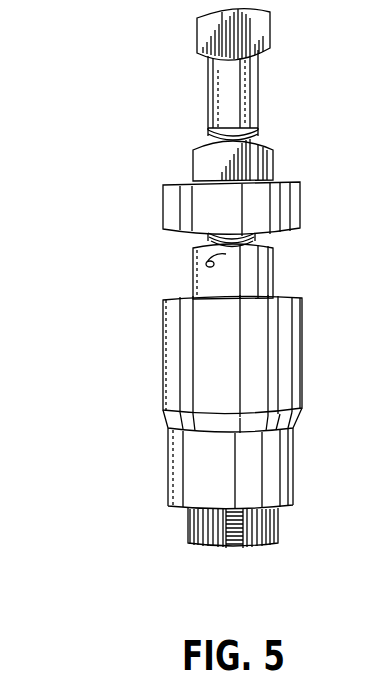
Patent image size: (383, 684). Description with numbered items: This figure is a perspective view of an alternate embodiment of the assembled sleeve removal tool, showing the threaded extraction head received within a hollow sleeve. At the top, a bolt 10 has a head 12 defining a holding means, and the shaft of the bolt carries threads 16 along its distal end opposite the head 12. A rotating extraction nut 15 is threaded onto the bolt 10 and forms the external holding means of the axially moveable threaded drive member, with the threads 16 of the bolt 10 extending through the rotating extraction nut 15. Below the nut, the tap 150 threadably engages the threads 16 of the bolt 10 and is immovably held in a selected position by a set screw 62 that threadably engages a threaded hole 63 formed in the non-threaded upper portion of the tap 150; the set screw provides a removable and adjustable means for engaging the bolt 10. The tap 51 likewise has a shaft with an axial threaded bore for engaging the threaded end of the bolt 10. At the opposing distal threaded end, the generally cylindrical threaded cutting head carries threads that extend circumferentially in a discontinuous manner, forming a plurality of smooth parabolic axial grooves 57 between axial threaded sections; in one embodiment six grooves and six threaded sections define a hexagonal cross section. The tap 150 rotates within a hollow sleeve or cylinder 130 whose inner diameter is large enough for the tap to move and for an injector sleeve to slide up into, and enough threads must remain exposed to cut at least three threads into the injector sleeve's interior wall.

The bolt 10 is at (258, 77).
The head 12 is at (257, 35).
The rotating extraction nut 15 is at (268, 160).
The threads 16 is at (257, 133).
The tap 51 is at (200, 277).
The parabolic axial grooves 57 is at (233, 548).
The set screw 62 is at (214, 269).
The threaded hole 63 is at (215, 254).
The hollow sleeve or cylinder 130 is at (273, 333).
The tap 150 is at (140, 336).